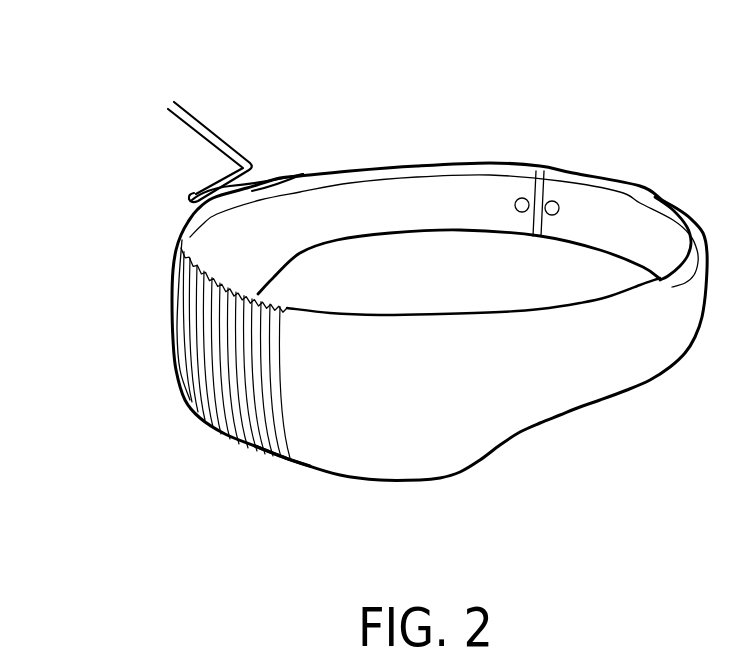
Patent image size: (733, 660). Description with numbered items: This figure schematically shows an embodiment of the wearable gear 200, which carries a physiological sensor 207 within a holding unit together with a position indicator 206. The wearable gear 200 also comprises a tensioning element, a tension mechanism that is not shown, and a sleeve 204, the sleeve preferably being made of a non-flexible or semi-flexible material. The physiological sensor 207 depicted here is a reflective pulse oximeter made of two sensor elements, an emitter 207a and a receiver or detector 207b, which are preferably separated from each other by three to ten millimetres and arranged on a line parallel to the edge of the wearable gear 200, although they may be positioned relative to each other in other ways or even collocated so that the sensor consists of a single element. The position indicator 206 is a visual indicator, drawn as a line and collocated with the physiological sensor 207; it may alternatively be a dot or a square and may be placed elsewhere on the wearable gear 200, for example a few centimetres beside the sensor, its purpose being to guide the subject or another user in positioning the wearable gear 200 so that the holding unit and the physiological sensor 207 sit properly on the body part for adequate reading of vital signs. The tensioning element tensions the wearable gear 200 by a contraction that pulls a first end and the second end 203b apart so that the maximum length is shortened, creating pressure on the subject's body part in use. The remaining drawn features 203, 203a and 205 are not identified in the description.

The wearable gear 200 is at (371, 252).
The ribbed section of band 203 is at (187, 385).
The lower edge of ribbed section 203a is at (285, 459).
The second end 203b is at (182, 233).
The sleeve 204 is at (624, 367).
The strap 205 is at (202, 125).
The position indicator 206 is at (541, 175).
The physiological sensor 207 is at (564, 189).
The emitter 207a is at (515, 200).
The receiver 207b is at (556, 206).